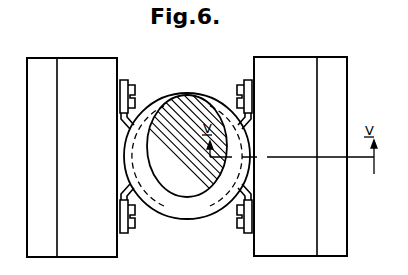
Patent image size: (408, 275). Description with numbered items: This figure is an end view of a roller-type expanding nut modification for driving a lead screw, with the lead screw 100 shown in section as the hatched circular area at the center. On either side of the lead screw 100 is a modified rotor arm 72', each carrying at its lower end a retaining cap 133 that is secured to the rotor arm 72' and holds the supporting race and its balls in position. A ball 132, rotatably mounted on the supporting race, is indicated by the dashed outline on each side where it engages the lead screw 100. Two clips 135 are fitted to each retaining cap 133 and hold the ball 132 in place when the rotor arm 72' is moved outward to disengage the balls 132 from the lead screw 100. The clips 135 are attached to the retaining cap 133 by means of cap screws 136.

The modified rotor arm 72' is at (198, 143).
The retaining cap 133 is at (83, 63).
The lead screw 100 is at (196, 83).
The ball 132 is at (134, 128).
The clips 135 is at (120, 94).
The cap screws 136 is at (128, 82).